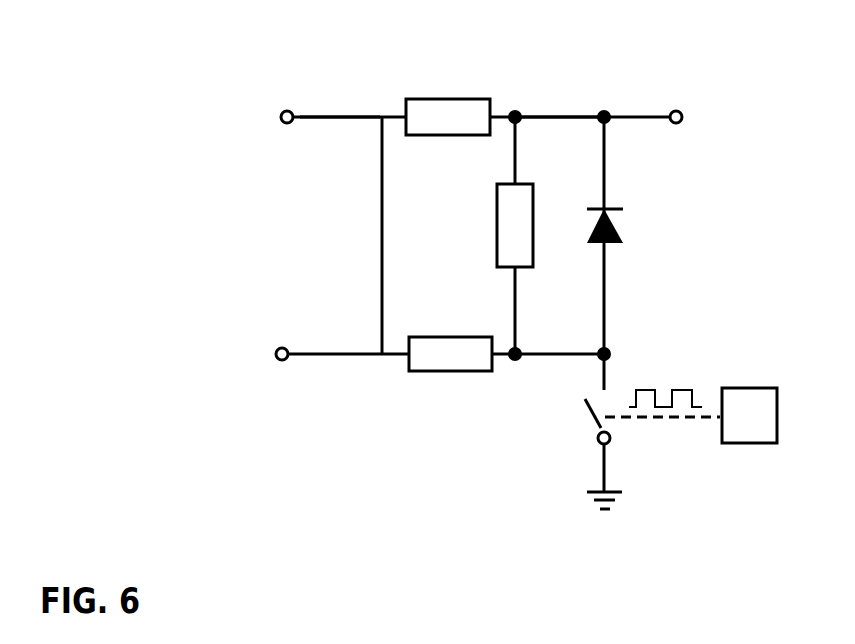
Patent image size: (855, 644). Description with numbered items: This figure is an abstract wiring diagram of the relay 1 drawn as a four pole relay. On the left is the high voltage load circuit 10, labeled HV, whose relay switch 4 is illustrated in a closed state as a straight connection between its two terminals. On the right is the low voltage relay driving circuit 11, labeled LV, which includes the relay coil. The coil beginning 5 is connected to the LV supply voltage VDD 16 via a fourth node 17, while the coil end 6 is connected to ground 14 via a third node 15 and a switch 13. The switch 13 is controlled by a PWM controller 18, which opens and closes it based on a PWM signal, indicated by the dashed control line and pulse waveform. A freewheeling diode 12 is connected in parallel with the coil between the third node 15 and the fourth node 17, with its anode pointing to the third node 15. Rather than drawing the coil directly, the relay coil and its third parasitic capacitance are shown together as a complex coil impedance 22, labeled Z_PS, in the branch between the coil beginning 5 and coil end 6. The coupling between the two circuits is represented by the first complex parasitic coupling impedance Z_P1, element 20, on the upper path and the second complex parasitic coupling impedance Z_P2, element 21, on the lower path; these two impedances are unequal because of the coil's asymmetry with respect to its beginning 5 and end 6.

The relay 1 is at (245, 49).
The relay switch 4 is at (382, 244).
The coil beginning 5 is at (523, 114).
The coil end 6 is at (520, 358).
The load circuit 10 is at (323, 117).
The relay driving circuit 11 is at (558, 112).
The freewheeling diode 12 is at (617, 225).
The switch 13 is at (590, 421).
The ground 14 is at (622, 500).
The third node 15 is at (612, 353).
The LV supply voltage VDD 16 is at (681, 111).
The fourth node 17 is at (607, 112).
The PWM controller 18 is at (691, 421).
The first parasitic impedance Z_P1 20 is at (478, 98).
The second parasitic impedance Z_P2 21 is at (421, 372).
The complex coil impedance 22 is at (533, 257).